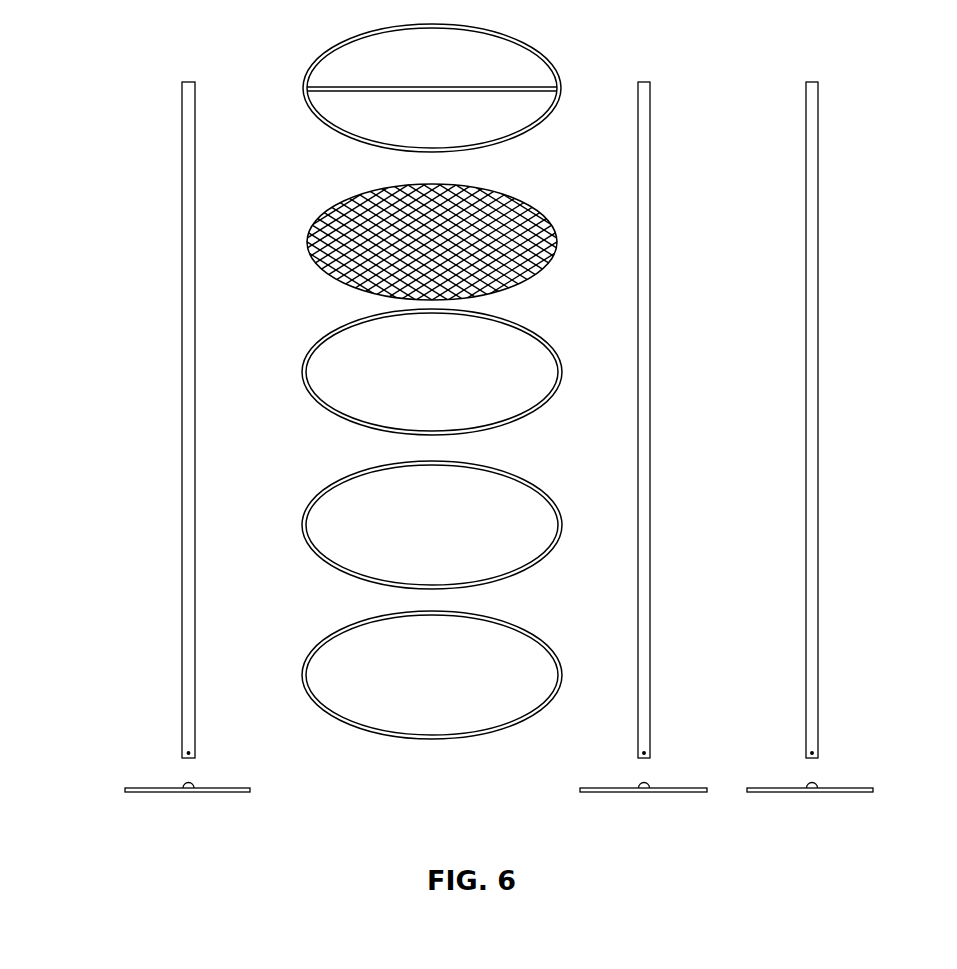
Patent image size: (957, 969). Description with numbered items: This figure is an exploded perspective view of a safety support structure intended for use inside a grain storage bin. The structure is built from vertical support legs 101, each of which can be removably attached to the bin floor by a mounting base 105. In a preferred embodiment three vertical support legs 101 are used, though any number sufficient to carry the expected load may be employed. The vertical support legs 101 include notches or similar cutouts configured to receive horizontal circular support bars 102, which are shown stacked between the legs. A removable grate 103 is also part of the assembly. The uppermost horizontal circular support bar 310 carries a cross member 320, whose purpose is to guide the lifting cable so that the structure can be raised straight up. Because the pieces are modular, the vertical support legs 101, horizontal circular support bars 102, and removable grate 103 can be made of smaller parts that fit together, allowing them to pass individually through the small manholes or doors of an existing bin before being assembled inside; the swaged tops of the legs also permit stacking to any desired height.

The vertical support legs 101 is at (183, 164).
The horizontal circular support bars 102 is at (533, 329).
The removable grate 103 is at (517, 202).
The mounting bases 105 is at (140, 788).
The uppermost horizontal circular support bar 310 is at (323, 52).
The cross member 320 is at (428, 87).